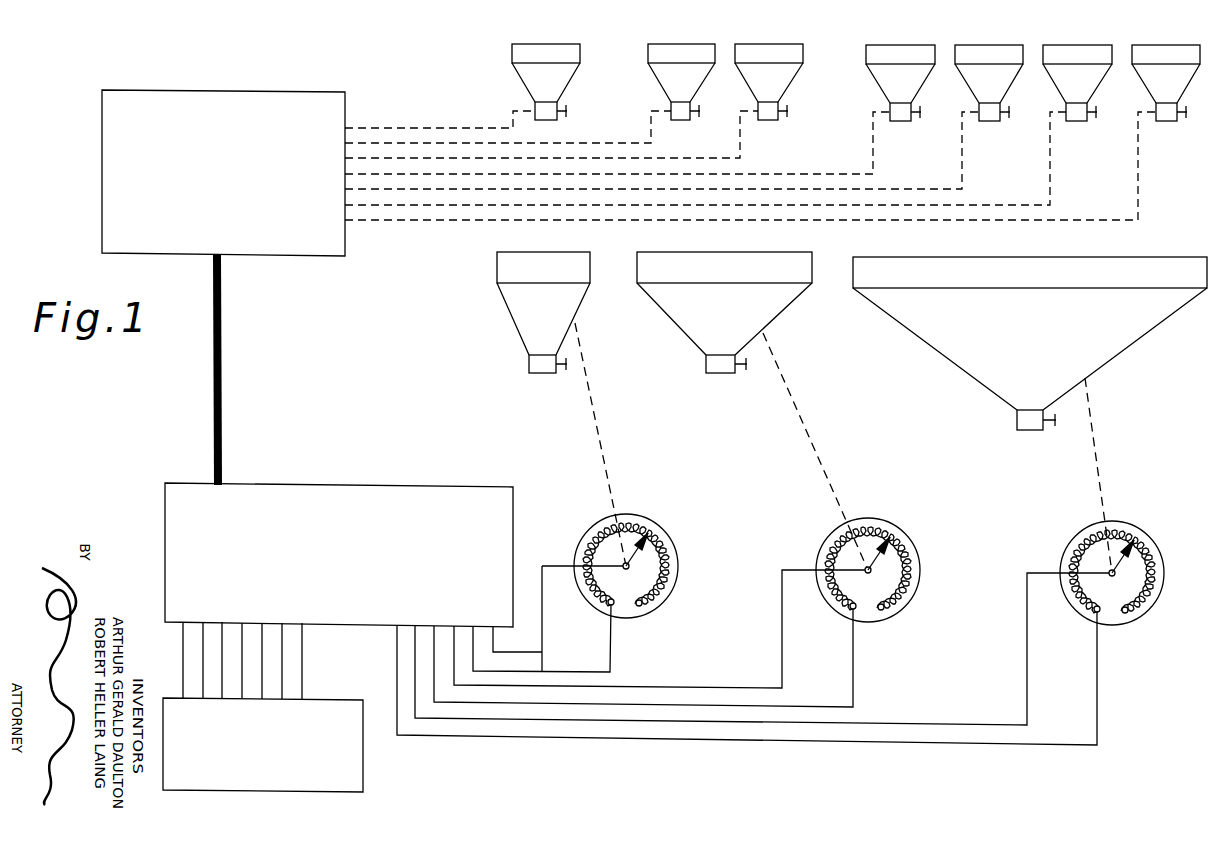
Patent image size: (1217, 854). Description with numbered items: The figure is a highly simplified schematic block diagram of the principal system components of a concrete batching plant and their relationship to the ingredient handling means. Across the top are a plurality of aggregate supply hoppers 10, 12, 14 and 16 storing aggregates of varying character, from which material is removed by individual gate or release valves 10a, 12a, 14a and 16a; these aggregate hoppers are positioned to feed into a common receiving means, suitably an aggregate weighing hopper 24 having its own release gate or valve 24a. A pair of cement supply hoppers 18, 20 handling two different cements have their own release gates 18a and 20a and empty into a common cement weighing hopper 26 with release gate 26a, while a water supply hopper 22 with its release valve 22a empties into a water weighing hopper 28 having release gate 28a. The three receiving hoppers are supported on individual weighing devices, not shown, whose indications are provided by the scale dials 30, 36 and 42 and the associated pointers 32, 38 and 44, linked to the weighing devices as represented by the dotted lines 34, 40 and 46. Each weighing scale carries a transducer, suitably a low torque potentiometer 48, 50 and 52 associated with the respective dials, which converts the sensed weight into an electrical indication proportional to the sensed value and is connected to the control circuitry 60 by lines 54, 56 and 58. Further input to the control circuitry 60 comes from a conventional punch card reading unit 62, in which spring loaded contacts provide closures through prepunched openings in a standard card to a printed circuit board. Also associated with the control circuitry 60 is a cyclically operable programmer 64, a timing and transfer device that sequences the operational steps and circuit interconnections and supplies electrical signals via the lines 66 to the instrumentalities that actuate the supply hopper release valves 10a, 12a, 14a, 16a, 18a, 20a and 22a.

The aggregate supply hopper 10 is at (1178, 74).
The release valve 10a is at (1188, 118).
The aggregate supply hopper 12 is at (1096, 74).
The release valve 12a is at (1098, 118).
The aggregate supply hopper 14 is at (1006, 74).
The release valve 14a is at (1012, 118).
The aggregate supply hopper 16 is at (920, 74).
The release valve 16a is at (924, 118).
The cement supply hopper 18 is at (792, 64).
The release gate 18a is at (789, 113).
The cement supply hopper 20 is at (656, 68).
The release gate 20a is at (701, 113).
The water supply hopper 22 is at (524, 66).
The release gate 22a is at (568, 113).
The aggregate weighing hopper 24 is at (1030, 367).
The release gate 24a is at (1060, 434).
The cement weighing hopper 26 is at (680, 322).
The release gate 26a is at (743, 376).
The water weighing hopper 28 is at (513, 303).
The release gate 28a is at (563, 376).
The scale dial 30 is at (1108, 573).
The pointer 32 is at (1126, 558).
The dotted line 34 is at (1099, 472).
The scale dial 36 is at (883, 567).
The pointer 38 is at (886, 552).
The dotted line 40 is at (826, 464).
The scale dial 42 is at (640, 562).
The pointer 44 is at (641, 552).
The dotted line 46 is at (604, 450).
The low torque potentiometer 48 is at (1068, 545).
The low torque potentiometer 50 is at (834, 538).
The low torque potentiometer 52 is at (596, 540).
The line 54 is at (752, 737).
The line 56 is at (688, 690).
The line 58 is at (538, 657).
The control circuitry 60 is at (357, 488).
The punch card reading unit 62 is at (362, 752).
The programmer 64 is at (172, 96).
The lines 66 is at (222, 358).